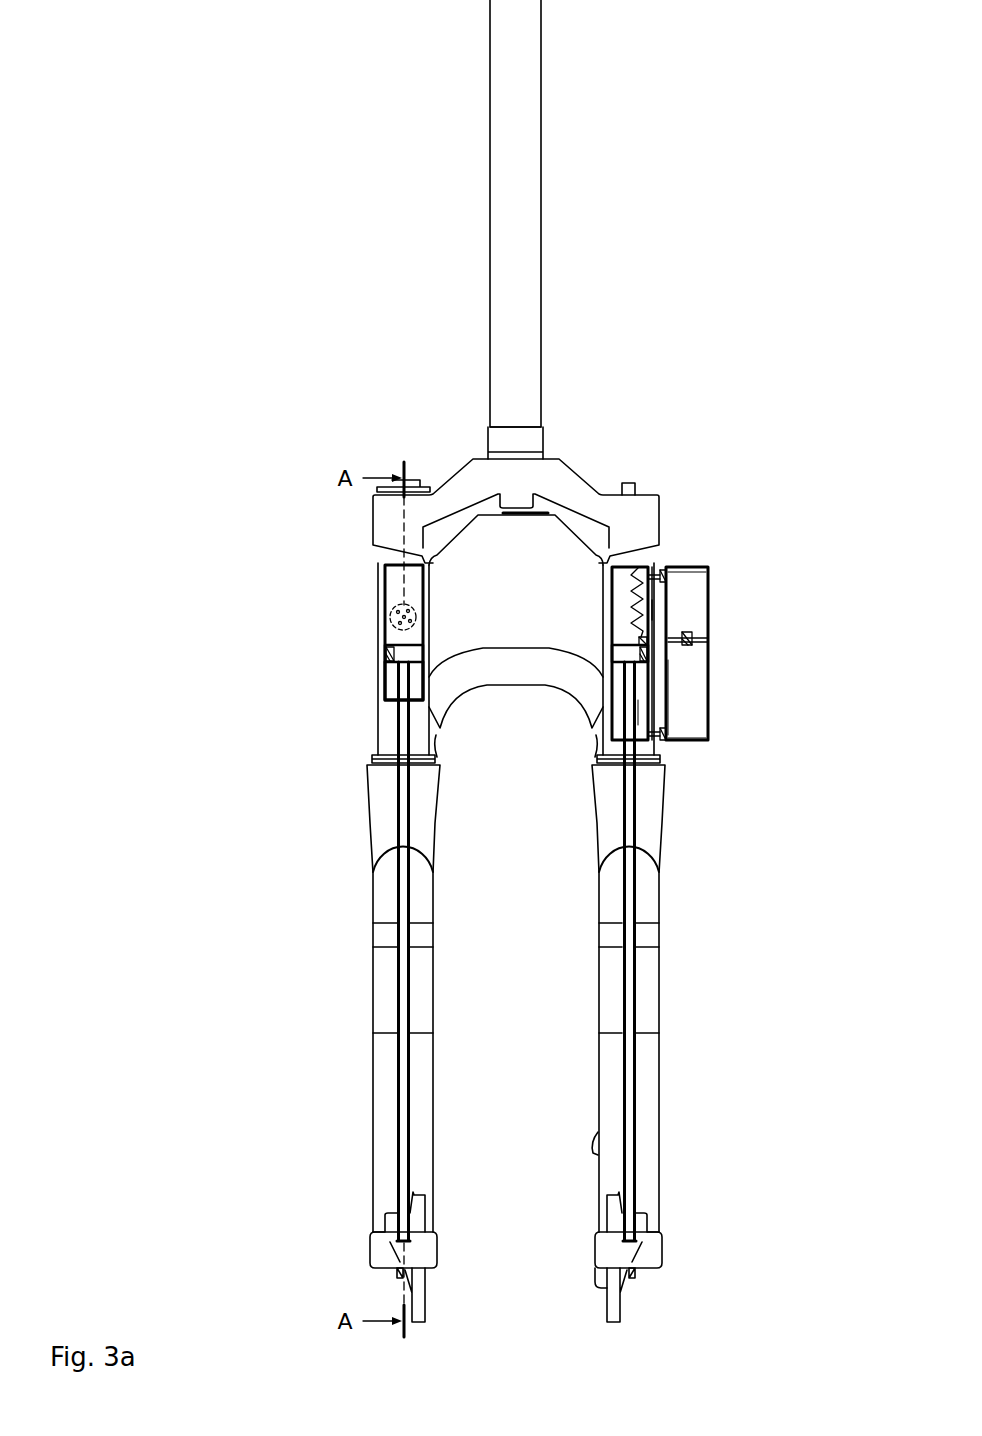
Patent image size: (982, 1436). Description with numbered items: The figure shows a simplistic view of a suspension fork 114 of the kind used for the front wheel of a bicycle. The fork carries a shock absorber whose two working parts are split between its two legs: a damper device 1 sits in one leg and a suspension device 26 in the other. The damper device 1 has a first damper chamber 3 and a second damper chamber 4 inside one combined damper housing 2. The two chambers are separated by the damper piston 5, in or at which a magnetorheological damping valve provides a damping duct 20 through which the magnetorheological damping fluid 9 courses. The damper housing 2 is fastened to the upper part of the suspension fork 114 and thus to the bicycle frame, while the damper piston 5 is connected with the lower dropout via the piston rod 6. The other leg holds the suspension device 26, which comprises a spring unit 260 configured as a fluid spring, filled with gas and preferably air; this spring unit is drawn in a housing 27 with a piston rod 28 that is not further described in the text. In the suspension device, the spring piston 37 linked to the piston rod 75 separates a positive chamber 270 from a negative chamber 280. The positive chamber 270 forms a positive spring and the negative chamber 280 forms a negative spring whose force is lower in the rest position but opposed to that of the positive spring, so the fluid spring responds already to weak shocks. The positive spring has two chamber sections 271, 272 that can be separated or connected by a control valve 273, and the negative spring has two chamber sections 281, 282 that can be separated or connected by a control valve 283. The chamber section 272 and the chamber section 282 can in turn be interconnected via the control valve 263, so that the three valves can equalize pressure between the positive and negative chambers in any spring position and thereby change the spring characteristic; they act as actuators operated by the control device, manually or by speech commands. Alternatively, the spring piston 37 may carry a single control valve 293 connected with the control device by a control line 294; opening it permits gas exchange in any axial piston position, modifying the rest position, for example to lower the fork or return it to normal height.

The suspension fork 114 is at (175, 182).
The damper device 1 is at (268, 425).
The damper housing 2 is at (385, 570).
The first damper chamber 3 is at (398, 593).
The magnetorheological damping fluid 9 is at (388, 612).
The damper piston 5 is at (402, 645).
The damping duct 20 is at (387, 658).
The second damper chamber 4 is at (388, 688).
The piston rod 6 is at (404, 737).
The spring unit housing 27 is at (610, 568).
The control line 294 is at (612, 597).
The control valve 293 is at (640, 613).
The spring piston 37 is at (612, 647).
The spring piston rod 28 is at (620, 655).
The piston rod 75 is at (631, 815).
The suspension device 26 is at (716, 541).
The spring unit 260 is at (670, 562).
The control valve 263 is at (710, 655).
The control valve 273 is at (664, 566).
The chamber section 272 is at (692, 595).
The chamber section 271 is at (652, 609).
The positive chamber 270 is at (710, 628).
The chamber section 282 is at (693, 693).
The chamber section 281 is at (645, 712).
The negative chamber 280 is at (710, 735).
The control valve 283 is at (664, 744).